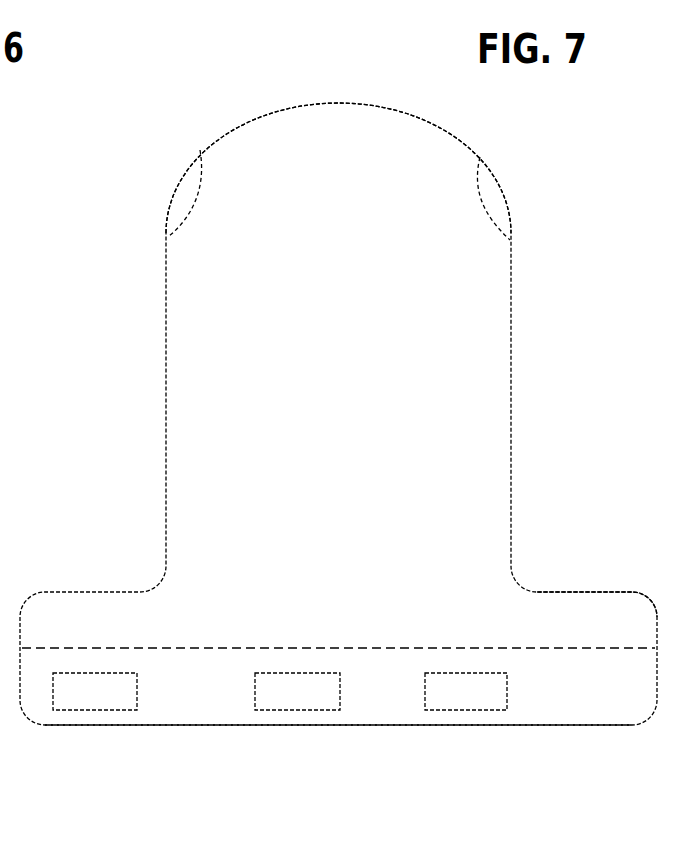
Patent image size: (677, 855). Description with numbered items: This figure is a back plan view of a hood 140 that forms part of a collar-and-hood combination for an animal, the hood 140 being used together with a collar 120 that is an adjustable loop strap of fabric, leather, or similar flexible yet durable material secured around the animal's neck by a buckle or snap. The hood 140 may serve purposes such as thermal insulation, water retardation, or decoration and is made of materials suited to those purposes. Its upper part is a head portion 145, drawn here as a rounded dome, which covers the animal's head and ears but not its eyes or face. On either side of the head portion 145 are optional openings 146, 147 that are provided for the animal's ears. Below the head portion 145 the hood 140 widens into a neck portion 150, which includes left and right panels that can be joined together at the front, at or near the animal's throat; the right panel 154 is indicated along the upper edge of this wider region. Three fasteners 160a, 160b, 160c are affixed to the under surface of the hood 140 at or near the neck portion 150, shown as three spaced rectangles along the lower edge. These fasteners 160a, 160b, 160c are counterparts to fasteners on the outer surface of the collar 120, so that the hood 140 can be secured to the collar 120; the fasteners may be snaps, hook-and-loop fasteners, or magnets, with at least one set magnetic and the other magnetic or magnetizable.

The collar 120 is at (18, 807).
The hood 140 is at (27, 612).
The head portion 145 is at (447, 130).
The opening 146 is at (175, 186).
The opening 147 is at (507, 193).
The neck portion 150 is at (198, 727).
The right panel 154 is at (635, 594).
The fastener 160a is at (97, 710).
The fastener 160b is at (297, 710).
The fastener 160c is at (465, 710).